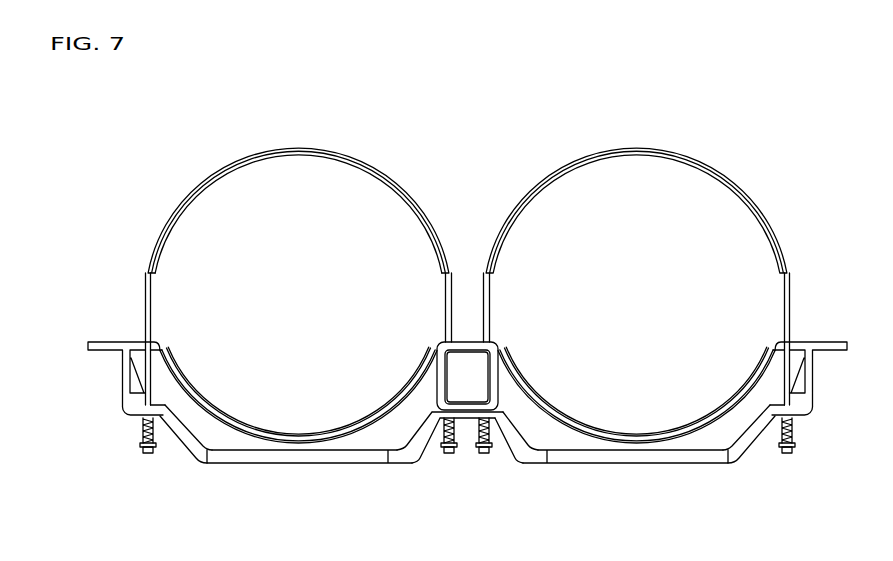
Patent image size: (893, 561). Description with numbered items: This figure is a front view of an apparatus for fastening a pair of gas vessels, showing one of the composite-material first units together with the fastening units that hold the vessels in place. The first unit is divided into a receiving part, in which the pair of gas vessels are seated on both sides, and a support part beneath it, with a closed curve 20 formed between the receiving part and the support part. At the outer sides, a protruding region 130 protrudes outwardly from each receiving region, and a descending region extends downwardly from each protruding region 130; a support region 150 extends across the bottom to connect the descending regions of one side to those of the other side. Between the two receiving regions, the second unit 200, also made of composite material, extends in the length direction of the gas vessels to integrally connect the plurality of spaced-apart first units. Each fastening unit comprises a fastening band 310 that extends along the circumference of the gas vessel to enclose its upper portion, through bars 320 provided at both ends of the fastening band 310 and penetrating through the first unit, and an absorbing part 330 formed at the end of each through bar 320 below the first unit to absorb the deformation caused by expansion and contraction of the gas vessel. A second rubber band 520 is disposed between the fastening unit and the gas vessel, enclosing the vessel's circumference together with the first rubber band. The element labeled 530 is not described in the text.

The closed curve 20 is at (363, 444).
The protruding region 130 is at (93, 341).
The support region 150 is at (284, 466).
The second unit 200 is at (436, 394).
The fastening band 310 is at (303, 146).
The through bar 320 is at (143, 313).
The absorbing part 330 is at (149, 466).
The second rubber band 520 is at (430, 243).
The lower cradle strap 530 is at (229, 427).